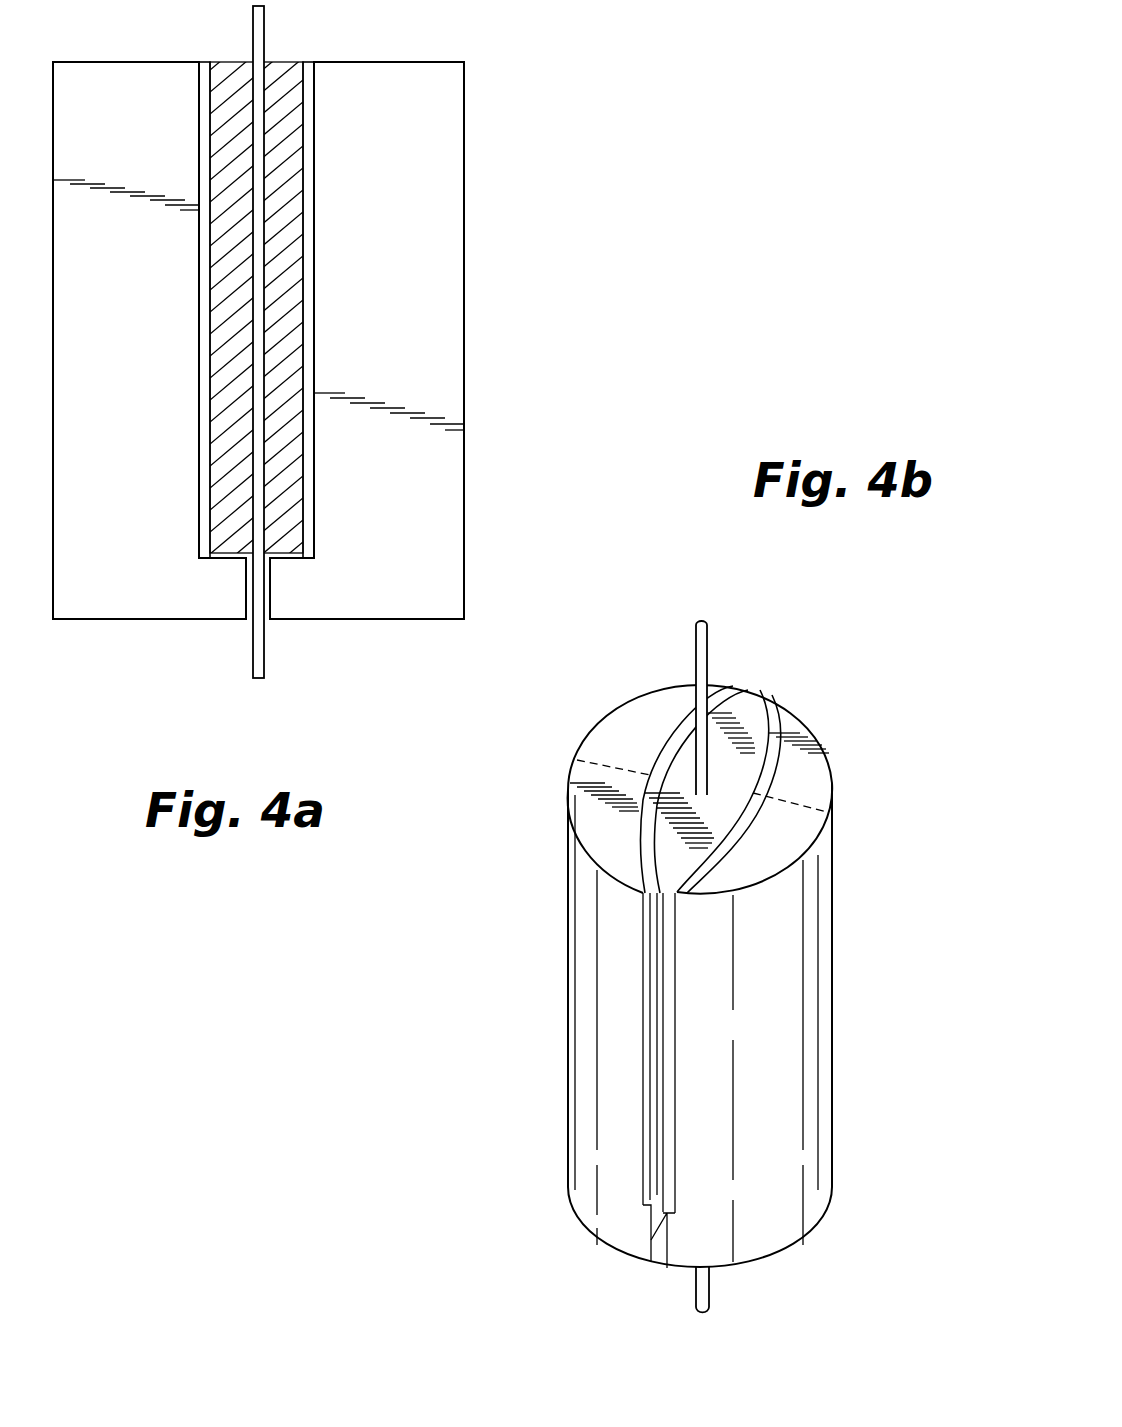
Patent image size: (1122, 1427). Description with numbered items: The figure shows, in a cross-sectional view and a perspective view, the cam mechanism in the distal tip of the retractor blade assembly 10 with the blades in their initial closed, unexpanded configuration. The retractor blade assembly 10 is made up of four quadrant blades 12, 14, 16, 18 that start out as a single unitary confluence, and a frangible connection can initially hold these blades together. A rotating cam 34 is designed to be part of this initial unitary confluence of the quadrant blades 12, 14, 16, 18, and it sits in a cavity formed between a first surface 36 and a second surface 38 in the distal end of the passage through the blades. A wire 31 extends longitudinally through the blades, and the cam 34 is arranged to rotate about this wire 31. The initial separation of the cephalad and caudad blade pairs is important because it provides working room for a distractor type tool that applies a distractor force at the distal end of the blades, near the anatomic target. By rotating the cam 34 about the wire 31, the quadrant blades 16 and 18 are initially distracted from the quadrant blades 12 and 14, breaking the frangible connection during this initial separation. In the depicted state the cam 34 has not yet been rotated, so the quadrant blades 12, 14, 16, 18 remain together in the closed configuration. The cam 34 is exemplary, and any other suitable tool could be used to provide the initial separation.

In FIG. 4a, the retractor blade assembly 10 is at (526, 100).
In FIG. 4b, the retractor blade assembly 10 is at (841, 673).
In FIG. 4a, the quadrant blade 12 is at (473, 305).
In FIG. 4b, the quadrant blade 12 is at (845, 760).
In FIG. 4b, the quadrant blade 14 is at (820, 860).
In FIG. 4b, the quadrant blade 16 is at (556, 806).
In FIG. 4a, the quadrant blade 18 is at (45, 305).
In FIG. 4b, the quadrant blade 18 is at (602, 705).
In FIG. 4a, the wire 31 is at (264, 645).
In FIG. 4b, the wire 31 is at (695, 648).
In FIG. 4a, the rotating cam 34 is at (229, 82).
In FIG. 4b, the rotating cam 34 is at (743, 713).
In FIG. 4a, the surface 36 is at (202, 325).
In FIG. 4b, the surface 36 is at (657, 782).
In FIG. 4a, the surface 38 is at (310, 293).
In FIG. 4b, the surface 38 is at (720, 831).